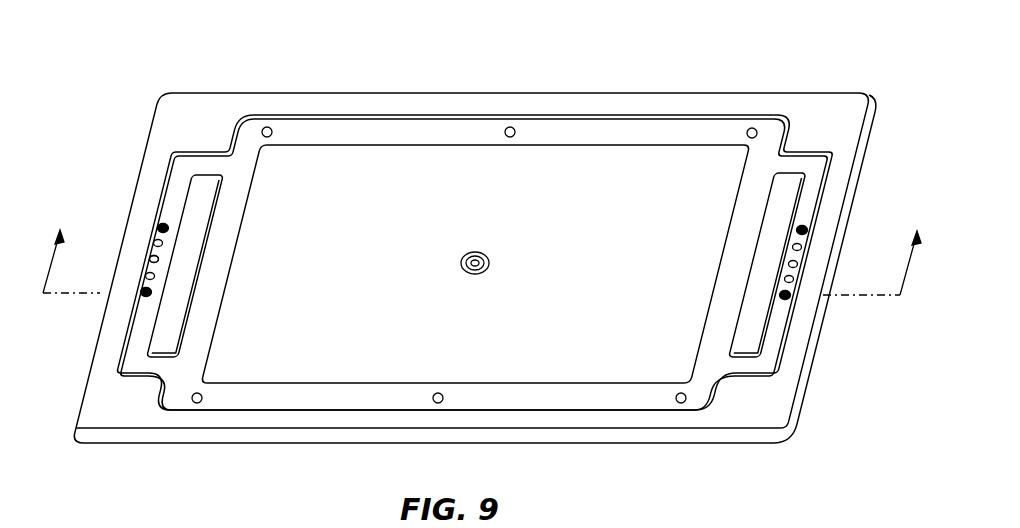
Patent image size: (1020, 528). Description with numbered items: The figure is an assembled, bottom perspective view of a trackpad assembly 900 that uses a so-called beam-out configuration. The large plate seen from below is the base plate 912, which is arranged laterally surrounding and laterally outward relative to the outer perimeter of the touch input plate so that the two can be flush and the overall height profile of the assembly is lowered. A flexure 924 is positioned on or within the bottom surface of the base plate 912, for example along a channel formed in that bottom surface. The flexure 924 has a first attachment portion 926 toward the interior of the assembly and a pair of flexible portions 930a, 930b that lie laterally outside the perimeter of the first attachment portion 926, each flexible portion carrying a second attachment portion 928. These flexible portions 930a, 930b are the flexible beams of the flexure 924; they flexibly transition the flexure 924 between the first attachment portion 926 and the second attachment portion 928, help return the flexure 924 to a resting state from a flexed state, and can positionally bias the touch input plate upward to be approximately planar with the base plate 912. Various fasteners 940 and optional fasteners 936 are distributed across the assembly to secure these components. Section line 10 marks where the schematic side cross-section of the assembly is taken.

The trackpad assembly 900 is at (137, 60).
The base plate 912 is at (196, 117).
The flexure 924 is at (362, 128).
The first attachment portion 926 is at (480, 128).
The second attachment portion 928 is at (150, 260).
The flexible portion 930a is at (187, 165).
The flexible portion 930b is at (814, 166).
The optional fasteners 936 is at (273, 127).
The fasteners 940 is at (168, 228).
The section line 10 is at (490, 249).